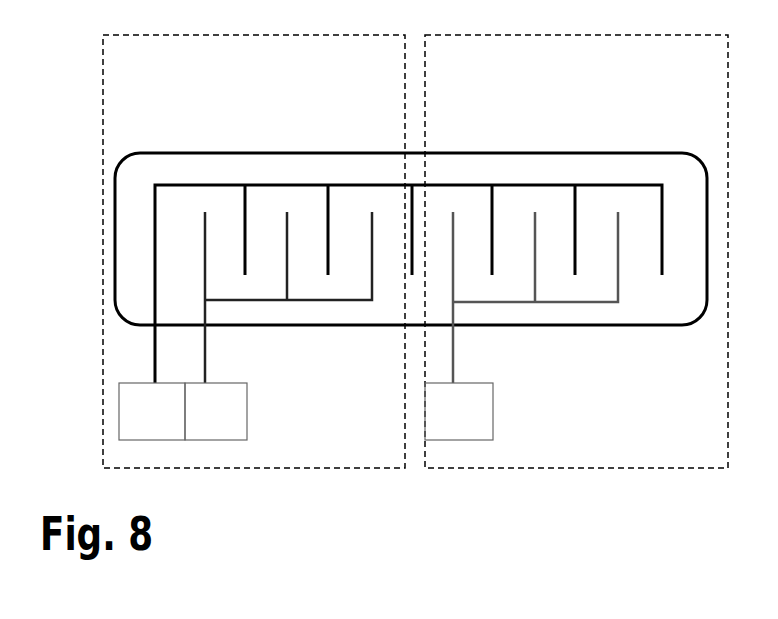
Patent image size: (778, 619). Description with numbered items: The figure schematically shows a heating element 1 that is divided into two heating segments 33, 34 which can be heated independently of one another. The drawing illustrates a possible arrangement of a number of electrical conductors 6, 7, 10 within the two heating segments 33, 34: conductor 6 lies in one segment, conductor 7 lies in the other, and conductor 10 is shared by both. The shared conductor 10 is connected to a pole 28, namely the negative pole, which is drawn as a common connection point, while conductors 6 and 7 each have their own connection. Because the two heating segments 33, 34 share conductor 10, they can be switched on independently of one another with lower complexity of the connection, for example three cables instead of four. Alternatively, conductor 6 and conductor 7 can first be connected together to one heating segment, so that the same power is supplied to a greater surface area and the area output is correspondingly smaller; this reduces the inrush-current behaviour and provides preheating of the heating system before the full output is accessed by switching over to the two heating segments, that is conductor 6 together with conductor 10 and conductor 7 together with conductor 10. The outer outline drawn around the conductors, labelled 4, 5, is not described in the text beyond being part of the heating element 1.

The heating element 1 is at (411, 190).
The substrate 4 is at (411, 209).
The electrode layer 5 is at (568, 165).
The conductor 6 is at (303, 300).
The conductor 7 is at (578, 302).
The conductor 10 is at (268, 185).
The pole 28 is at (306, 411).
The heating segment 33 is at (255, 468).
The heating segment 34 is at (565, 468).